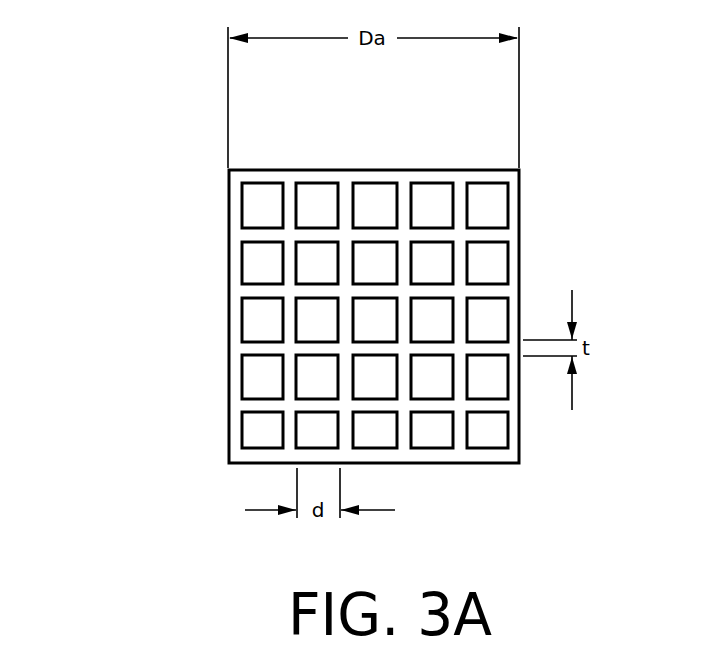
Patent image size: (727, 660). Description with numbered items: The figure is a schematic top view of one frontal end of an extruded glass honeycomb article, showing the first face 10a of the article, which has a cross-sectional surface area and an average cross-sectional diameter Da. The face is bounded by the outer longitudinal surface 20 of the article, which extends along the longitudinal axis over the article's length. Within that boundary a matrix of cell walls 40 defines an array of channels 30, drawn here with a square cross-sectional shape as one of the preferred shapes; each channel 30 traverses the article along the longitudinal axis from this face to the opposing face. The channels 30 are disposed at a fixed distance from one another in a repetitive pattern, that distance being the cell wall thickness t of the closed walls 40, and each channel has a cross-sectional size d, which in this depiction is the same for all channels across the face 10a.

The first face 10a is at (187, 233).
The outer longitudinal surface 20 is at (229, 386).
The channels 30 is at (257, 318).
The cell walls 40 is at (468, 430).